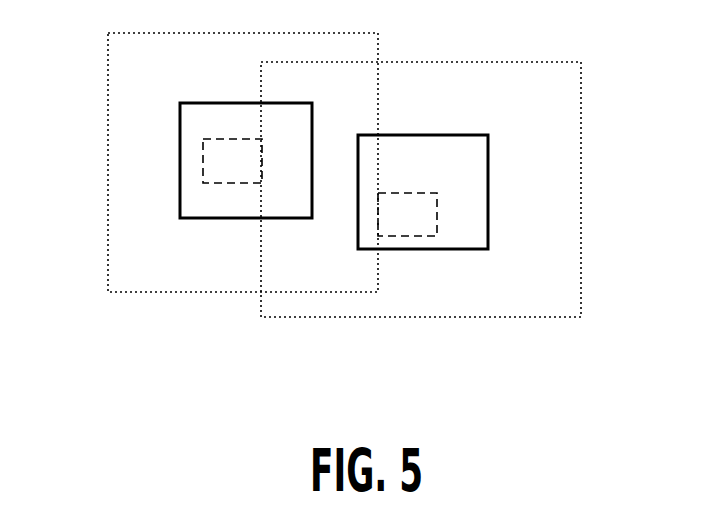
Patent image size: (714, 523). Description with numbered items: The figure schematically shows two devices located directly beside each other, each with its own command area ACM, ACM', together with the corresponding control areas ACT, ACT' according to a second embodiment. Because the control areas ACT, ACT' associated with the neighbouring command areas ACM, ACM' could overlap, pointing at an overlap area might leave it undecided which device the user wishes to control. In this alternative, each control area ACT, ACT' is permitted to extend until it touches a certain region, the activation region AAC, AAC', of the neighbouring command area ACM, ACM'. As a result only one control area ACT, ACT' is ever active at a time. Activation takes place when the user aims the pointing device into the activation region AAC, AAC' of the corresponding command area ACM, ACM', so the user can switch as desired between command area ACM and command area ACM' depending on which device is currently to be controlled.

The control area ACT is at (207, 162).
The control area ACT' is at (464, 189).
The command area ACM is at (176, 174).
The command area ACM' is at (516, 192).
The activation region AAC is at (238, 248).
The activation region AAC' is at (408, 255).